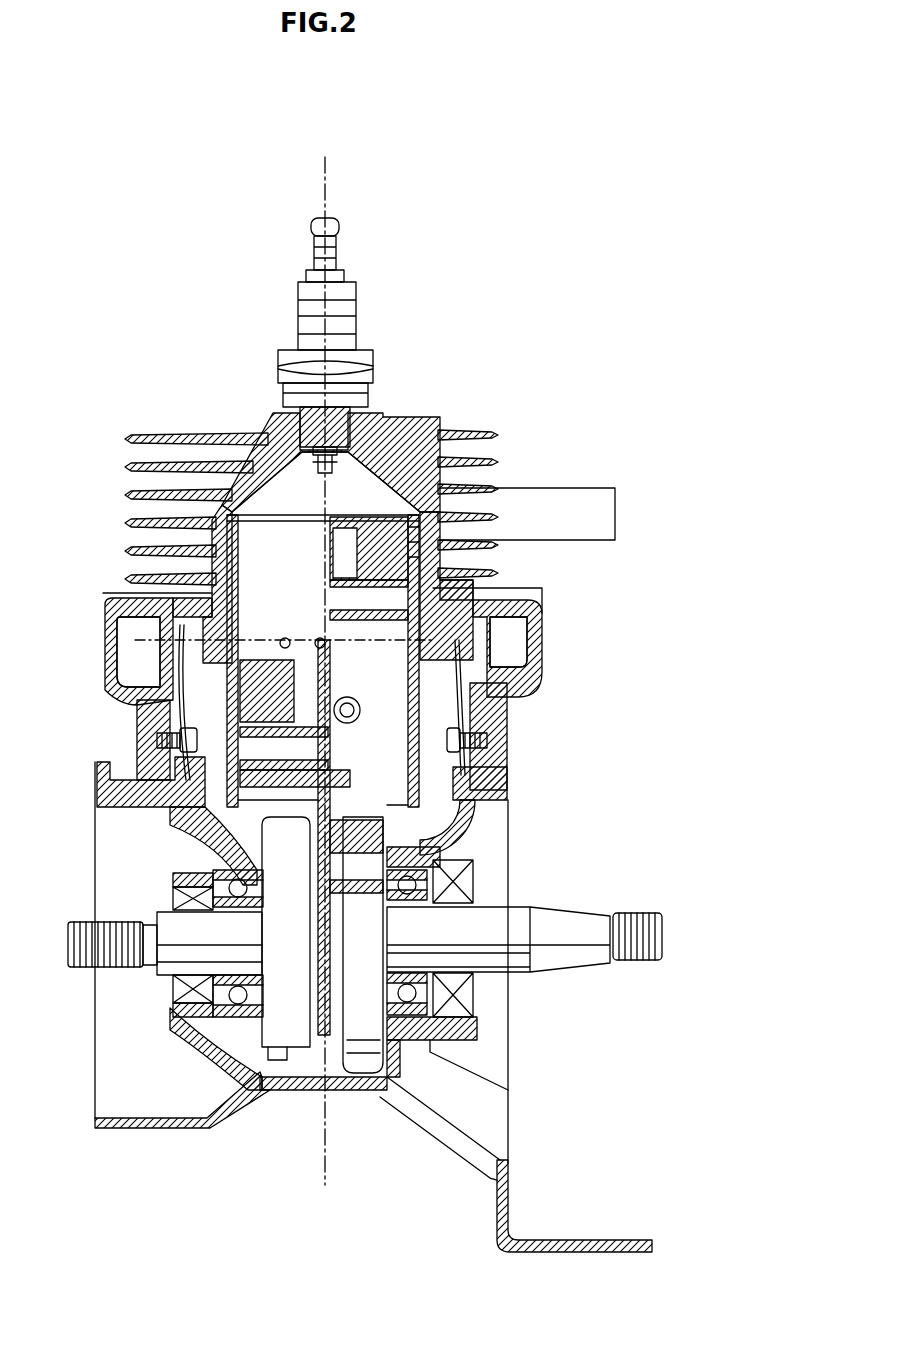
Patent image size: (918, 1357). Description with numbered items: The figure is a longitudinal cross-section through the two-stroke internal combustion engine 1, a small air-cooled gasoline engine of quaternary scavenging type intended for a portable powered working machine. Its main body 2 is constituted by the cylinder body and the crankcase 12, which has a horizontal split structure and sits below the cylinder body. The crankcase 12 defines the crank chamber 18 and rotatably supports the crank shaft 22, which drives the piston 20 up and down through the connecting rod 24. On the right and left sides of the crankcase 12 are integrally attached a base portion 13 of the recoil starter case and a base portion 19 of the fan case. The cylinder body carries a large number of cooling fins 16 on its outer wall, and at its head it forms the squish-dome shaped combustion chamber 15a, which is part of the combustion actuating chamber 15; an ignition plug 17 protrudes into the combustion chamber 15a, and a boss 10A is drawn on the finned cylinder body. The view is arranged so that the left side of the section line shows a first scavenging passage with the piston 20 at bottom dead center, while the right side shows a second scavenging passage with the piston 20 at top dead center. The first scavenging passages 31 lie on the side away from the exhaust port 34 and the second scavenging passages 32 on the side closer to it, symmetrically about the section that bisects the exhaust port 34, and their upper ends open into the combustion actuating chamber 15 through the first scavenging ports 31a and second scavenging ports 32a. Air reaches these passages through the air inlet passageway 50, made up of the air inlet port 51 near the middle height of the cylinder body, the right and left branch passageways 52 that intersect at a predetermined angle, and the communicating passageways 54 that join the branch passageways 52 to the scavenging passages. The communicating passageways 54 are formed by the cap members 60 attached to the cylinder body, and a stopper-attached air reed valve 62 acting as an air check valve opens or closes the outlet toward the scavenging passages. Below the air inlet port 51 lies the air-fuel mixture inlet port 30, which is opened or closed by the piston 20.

The two-stroke internal combustion engine 1 is at (152, 332).
The main body 2 is at (87, 494).
The port boss 10A is at (445, 563).
The crankcase 12 is at (272, 1095).
The base portion of the recoil starter case 13 is at (130, 1130).
The combustion actuating chamber 15 is at (350, 487).
The combustion chamber 15a is at (326, 482).
The cooling fins 16 is at (500, 462).
The ignition plug 17 is at (362, 445).
The crank chamber 18 is at (337, 1060).
The base portion of the fan case 19 is at (558, 1253).
The piston 20 is at (272, 537).
The crank shaft 22 is at (515, 955).
The connecting rod 24 is at (333, 783).
The air-fuel mixture inlet port 30 is at (350, 722).
The first scavenging passages 31 is at (205, 758).
The first scavenging ports 31a is at (200, 683).
The second scavenging passages 32 is at (508, 768).
The second scavenging ports 32a is at (505, 710).
The exhaust port 34 is at (285, 640).
The air inlet passageway 50 is at (203, 600).
The air inlet port 51 is at (318, 638).
The branch passageways 52 is at (527, 612).
The communicating passageways 54 is at (133, 638).
The cap members 60 is at (123, 690).
The air reed valve 62 is at (200, 640).